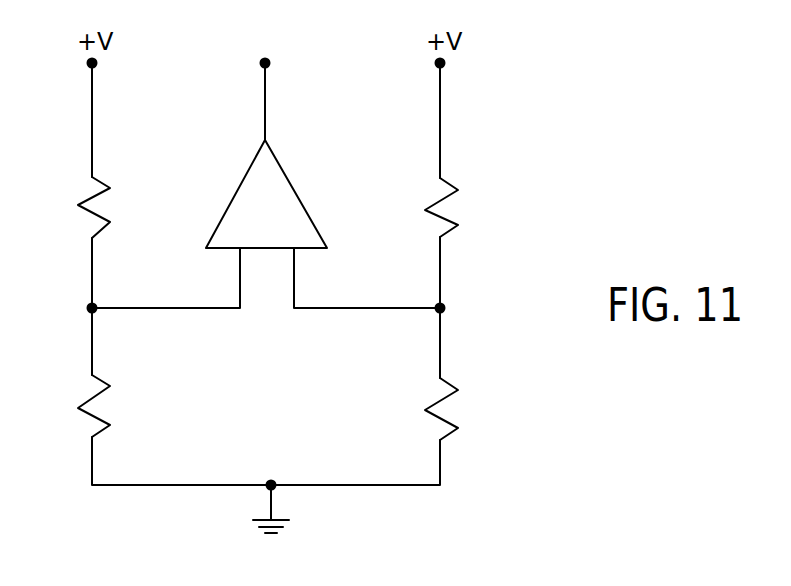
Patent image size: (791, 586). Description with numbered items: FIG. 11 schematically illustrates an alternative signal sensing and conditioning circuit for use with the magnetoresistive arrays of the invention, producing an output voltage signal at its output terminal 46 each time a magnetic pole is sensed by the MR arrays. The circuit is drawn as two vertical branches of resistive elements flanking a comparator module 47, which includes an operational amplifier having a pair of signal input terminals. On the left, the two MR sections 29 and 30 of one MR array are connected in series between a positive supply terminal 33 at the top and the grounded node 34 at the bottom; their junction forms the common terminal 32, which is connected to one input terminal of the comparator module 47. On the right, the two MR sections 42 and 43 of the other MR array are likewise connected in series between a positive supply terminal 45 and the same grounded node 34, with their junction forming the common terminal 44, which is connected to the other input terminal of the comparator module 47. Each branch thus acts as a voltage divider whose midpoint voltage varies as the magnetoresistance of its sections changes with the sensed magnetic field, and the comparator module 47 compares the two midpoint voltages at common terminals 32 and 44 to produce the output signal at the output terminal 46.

The MR section 29 is at (76, 207).
The MR section 30 is at (75, 406).
The common terminal 32 is at (147, 287).
The supply terminal 33 is at (75, 115).
The ground terminal 34 is at (269, 491).
The MR section 42 is at (458, 409).
The MR section 43 is at (458, 207).
The common terminal 44 is at (388, 288).
The supply terminal 45 is at (458, 119).
The output terminal 46 is at (283, 98).
The comparator module 47 is at (292, 226).